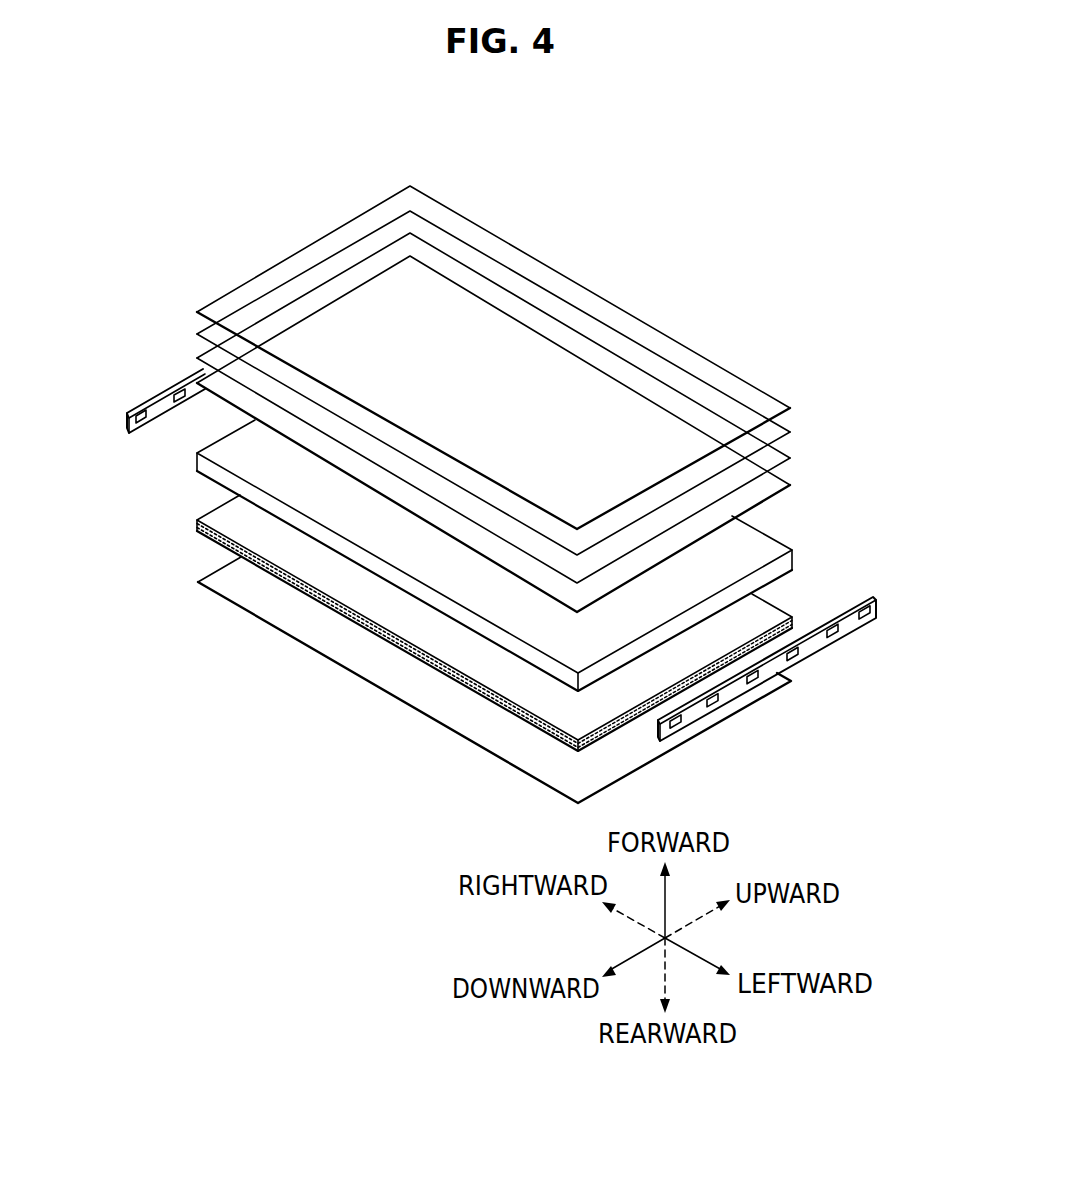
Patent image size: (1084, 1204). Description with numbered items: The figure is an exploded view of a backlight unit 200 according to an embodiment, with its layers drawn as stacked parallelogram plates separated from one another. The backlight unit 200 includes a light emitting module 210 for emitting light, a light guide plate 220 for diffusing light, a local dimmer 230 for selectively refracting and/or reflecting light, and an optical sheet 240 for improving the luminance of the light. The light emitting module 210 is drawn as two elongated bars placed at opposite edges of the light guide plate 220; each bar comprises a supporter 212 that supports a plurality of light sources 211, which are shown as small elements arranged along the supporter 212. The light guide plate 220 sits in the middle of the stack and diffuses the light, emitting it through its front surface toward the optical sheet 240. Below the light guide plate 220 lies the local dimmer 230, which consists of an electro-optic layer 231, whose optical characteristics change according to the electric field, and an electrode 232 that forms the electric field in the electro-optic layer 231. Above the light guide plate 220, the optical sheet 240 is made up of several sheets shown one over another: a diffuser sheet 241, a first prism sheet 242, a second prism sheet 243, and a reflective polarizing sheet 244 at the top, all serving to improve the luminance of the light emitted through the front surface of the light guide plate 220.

The backlight unit 200 is at (677, 172).
The light emitting module 210 is at (145, 333).
The light sources 211 is at (146, 408).
The supporter 212 is at (128, 419).
The light guide plate 220 is at (200, 467).
The local dimmer 230 is at (115, 527).
The electro-optic layer 231 is at (197, 524).
The electrode 232 is at (197, 583).
The optical sheet 240 is at (877, 372).
The diffuser sheet 241 is at (790, 485).
The first prism sheet 242 is at (790, 458).
The second prism sheet 243 is at (790, 432).
The reflective polarizing sheet 244 is at (790, 407).